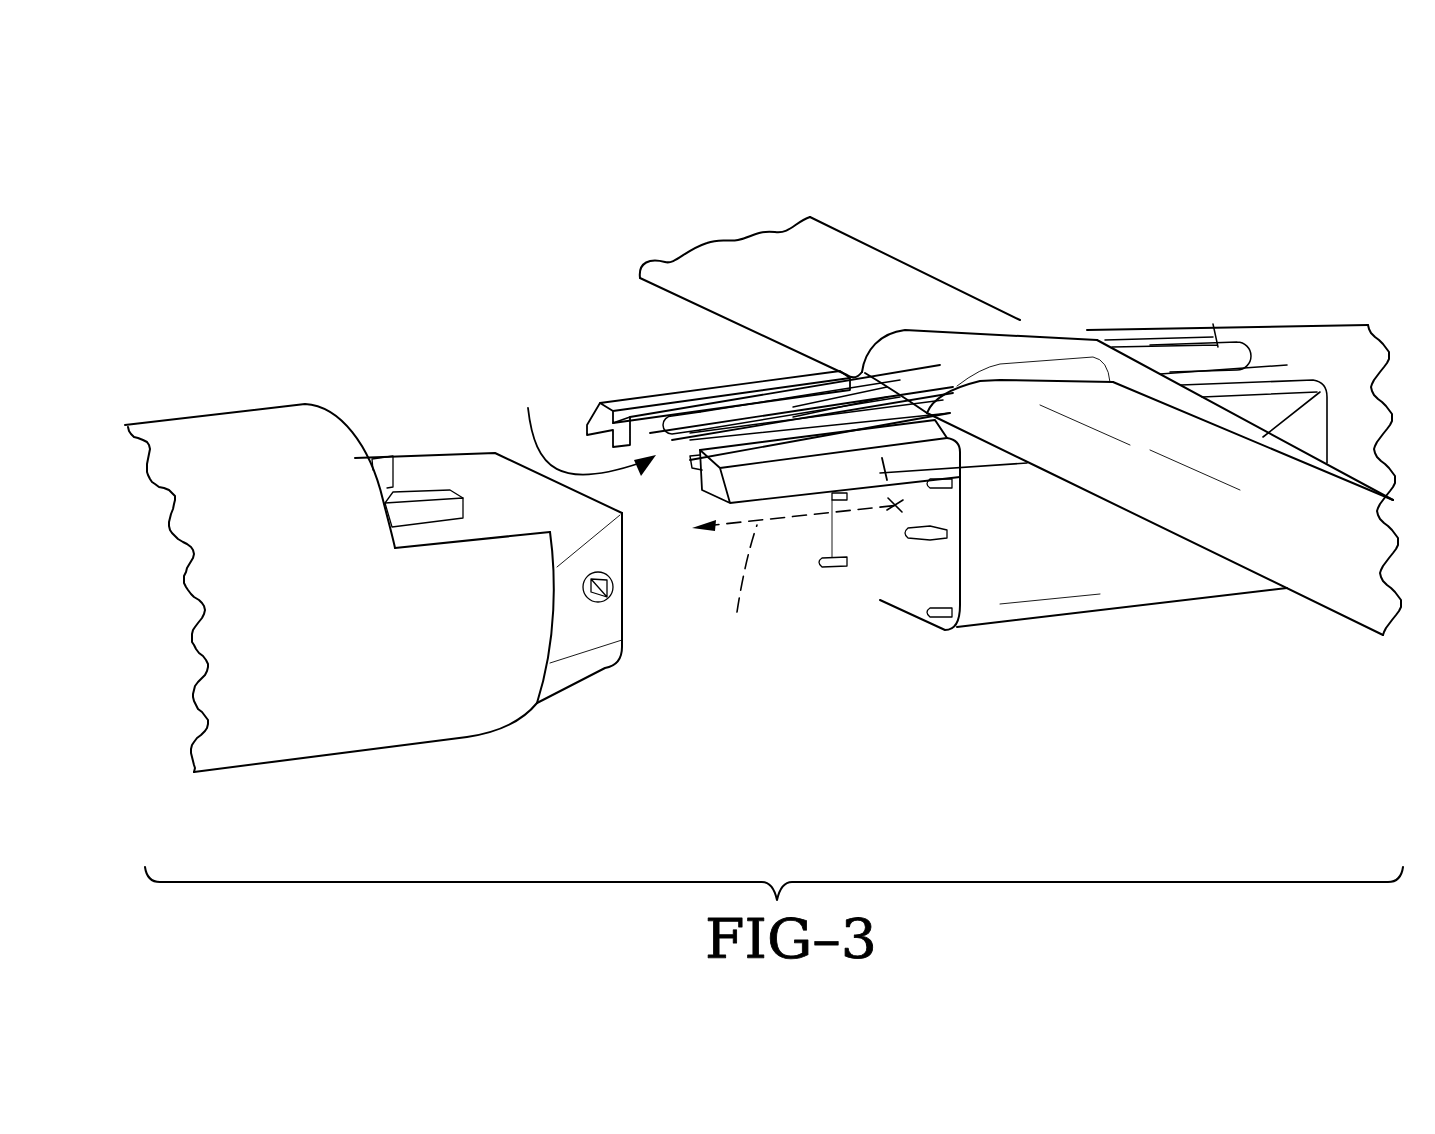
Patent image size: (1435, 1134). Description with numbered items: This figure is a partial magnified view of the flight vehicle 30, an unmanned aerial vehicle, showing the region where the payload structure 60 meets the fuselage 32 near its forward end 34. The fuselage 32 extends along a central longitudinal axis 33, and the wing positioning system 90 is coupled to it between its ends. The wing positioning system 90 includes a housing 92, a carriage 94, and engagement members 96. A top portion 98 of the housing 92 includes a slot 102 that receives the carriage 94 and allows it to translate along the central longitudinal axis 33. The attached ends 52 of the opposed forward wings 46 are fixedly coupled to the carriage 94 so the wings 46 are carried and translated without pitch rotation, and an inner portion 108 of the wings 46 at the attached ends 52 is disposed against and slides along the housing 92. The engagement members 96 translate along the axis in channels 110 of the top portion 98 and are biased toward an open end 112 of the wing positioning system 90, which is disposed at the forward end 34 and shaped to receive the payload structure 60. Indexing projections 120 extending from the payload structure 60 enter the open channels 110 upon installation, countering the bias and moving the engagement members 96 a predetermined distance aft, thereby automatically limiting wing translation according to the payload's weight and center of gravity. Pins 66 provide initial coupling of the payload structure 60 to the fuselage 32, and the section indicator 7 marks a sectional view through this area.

The flight vehicle 30 is at (527, 205).
The fuselage 32 is at (1273, 357).
The central longitudinal axis 33 is at (738, 584).
The forward end 34 is at (1093, 616).
The forward wings 46 is at (1355, 585).
The attached end 52 is at (1181, 458).
The payload structure 60 is at (372, 718).
The pins 66 is at (907, 537).
The section view indicator 7 is at (797, 524).
The wing positioning system 90 is at (982, 335).
The housing 92 is at (982, 455).
The carriage 94 is at (1035, 345).
The engagement member 96 is at (772, 425).
The top portion 98 is at (640, 405).
The slot 102 is at (720, 418).
The inner portion 108 is at (1068, 426).
The channels 110 is at (700, 482).
The open end 112 is at (580, 428).
The indexing projection 120 is at (427, 512).